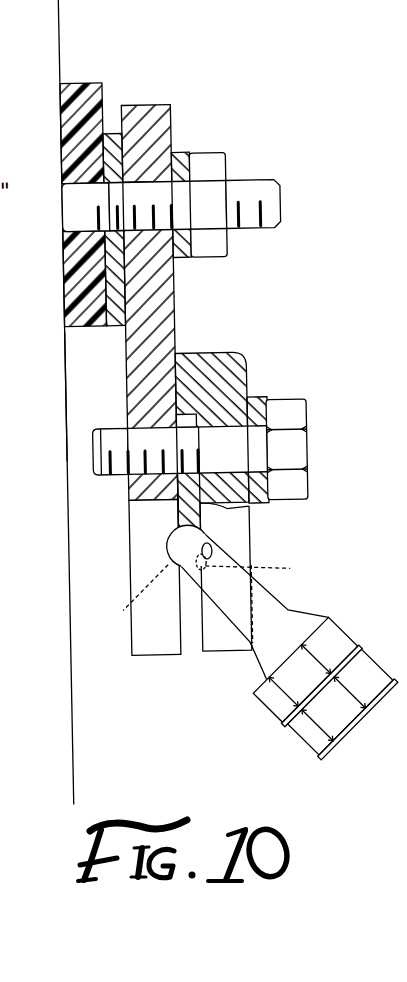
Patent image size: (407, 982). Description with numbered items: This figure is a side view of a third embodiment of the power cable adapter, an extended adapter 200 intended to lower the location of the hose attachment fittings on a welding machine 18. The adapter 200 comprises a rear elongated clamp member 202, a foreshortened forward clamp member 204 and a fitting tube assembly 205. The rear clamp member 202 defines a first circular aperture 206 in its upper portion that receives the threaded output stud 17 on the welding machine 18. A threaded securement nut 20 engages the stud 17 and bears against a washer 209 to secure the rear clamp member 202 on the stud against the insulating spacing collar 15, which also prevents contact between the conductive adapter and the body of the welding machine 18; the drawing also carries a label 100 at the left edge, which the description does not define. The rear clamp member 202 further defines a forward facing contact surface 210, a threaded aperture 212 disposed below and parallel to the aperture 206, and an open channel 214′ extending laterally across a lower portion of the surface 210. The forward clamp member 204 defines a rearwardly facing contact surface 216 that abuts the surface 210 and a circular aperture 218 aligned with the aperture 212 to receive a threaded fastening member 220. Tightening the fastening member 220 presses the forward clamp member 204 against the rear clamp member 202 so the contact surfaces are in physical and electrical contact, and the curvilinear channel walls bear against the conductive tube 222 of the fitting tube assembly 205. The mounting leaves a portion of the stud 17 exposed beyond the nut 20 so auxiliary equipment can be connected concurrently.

The adapter 200 is at (183, 87).
The first circular aperture 206 is at (159, 152).
The securement nut 20 is at (222, 166).
The output stud 17 is at (287, 203).
The washer 209 is at (190, 259).
The spacing collar 15 is at (77, 262).
The wall structure 100 is at (1, 394).
The forward facing contact surface 210 is at (177, 321).
The rear elongated clamp member 202 is at (126, 336).
The circular aperture 218 is at (219, 431).
The threaded fastening member 220 is at (290, 418).
The threaded aperture 212 is at (136, 463).
The foreshortened forward clamp member 204 is at (249, 542).
The conductive tube 222 is at (165, 536).
The open channel 214′ is at (268, 570).
The rearwardly facing contact surface 216 is at (195, 650).
The fitting tube assembly 205 is at (266, 727).
The welding machine 18 is at (66, 770).